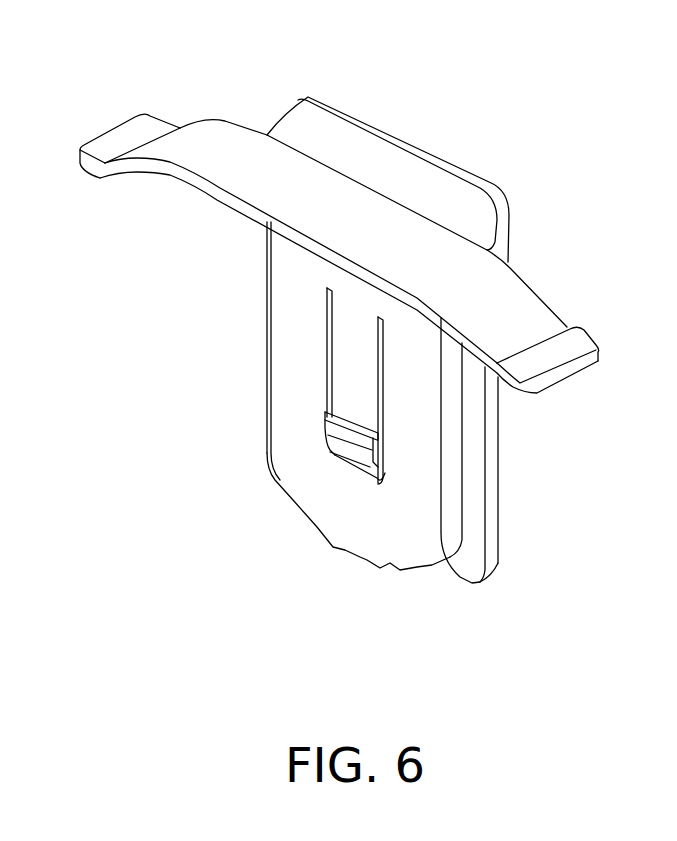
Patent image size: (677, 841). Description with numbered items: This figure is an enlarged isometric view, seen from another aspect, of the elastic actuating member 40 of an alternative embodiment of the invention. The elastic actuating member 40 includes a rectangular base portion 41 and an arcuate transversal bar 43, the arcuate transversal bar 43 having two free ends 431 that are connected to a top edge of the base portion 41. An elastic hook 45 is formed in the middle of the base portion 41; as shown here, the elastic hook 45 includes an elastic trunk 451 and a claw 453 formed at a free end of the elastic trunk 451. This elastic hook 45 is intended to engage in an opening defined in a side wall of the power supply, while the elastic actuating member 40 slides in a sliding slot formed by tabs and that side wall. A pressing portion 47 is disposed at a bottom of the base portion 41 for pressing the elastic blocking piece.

The elastic actuating member 40 is at (452, 117).
The arcuate transversal bar 43 is at (238, 165).
The free ends 431 is at (540, 312).
The rectangular base portion 41 is at (293, 440).
The elastic hook 45 is at (128, 253).
The elastic trunk 451 is at (347, 362).
The claw 453 is at (324, 418).
The pressing portion 47 is at (358, 557).